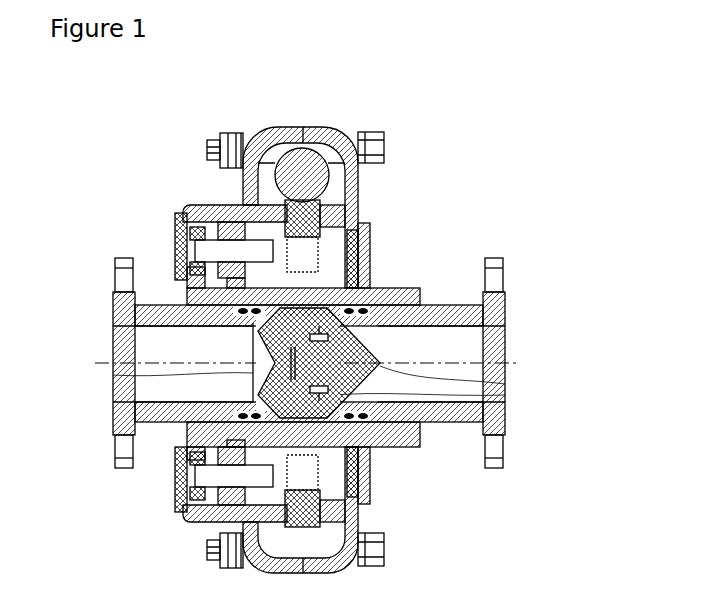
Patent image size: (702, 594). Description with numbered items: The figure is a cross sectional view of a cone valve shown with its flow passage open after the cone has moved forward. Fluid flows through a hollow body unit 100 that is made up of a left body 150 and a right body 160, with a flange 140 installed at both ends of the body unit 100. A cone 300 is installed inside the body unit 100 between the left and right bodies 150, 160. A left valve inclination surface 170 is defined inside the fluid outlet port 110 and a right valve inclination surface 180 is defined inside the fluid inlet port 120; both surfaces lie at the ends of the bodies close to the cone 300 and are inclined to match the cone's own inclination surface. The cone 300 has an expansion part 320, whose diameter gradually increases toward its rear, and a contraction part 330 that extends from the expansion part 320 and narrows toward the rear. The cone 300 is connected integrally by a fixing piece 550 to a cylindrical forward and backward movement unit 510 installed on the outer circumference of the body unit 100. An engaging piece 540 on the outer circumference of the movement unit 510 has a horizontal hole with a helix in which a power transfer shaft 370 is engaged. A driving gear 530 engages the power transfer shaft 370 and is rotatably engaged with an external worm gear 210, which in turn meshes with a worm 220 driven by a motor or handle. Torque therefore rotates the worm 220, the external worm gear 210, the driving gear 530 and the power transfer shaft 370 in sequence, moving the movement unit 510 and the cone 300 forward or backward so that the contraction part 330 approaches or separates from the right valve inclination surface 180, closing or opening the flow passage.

The body unit 100 is at (112, 306).
The fluid outlet port 110 is at (116, 350).
The fluid inlet port 120 is at (492, 340).
The flange 140 is at (505, 317).
The left body 150 is at (124, 289).
The right body 160 is at (492, 290).
The left valve inclination surface 170 is at (112, 417).
The right valve inclination surface 180 is at (410, 283).
The external worm gear 210 is at (346, 207).
The worm 220 is at (314, 163).
The cone 300 is at (500, 405).
The expansion part 320 is at (112, 375).
The contraction part 330 is at (492, 378).
The power transfer shaft 370 is at (190, 208).
The cylindrical forward and backward movement unit 510 is at (366, 278).
The driving gear 530 is at (233, 198).
The engaging piece 540 is at (172, 240).
The fixing piece 550 is at (372, 462).